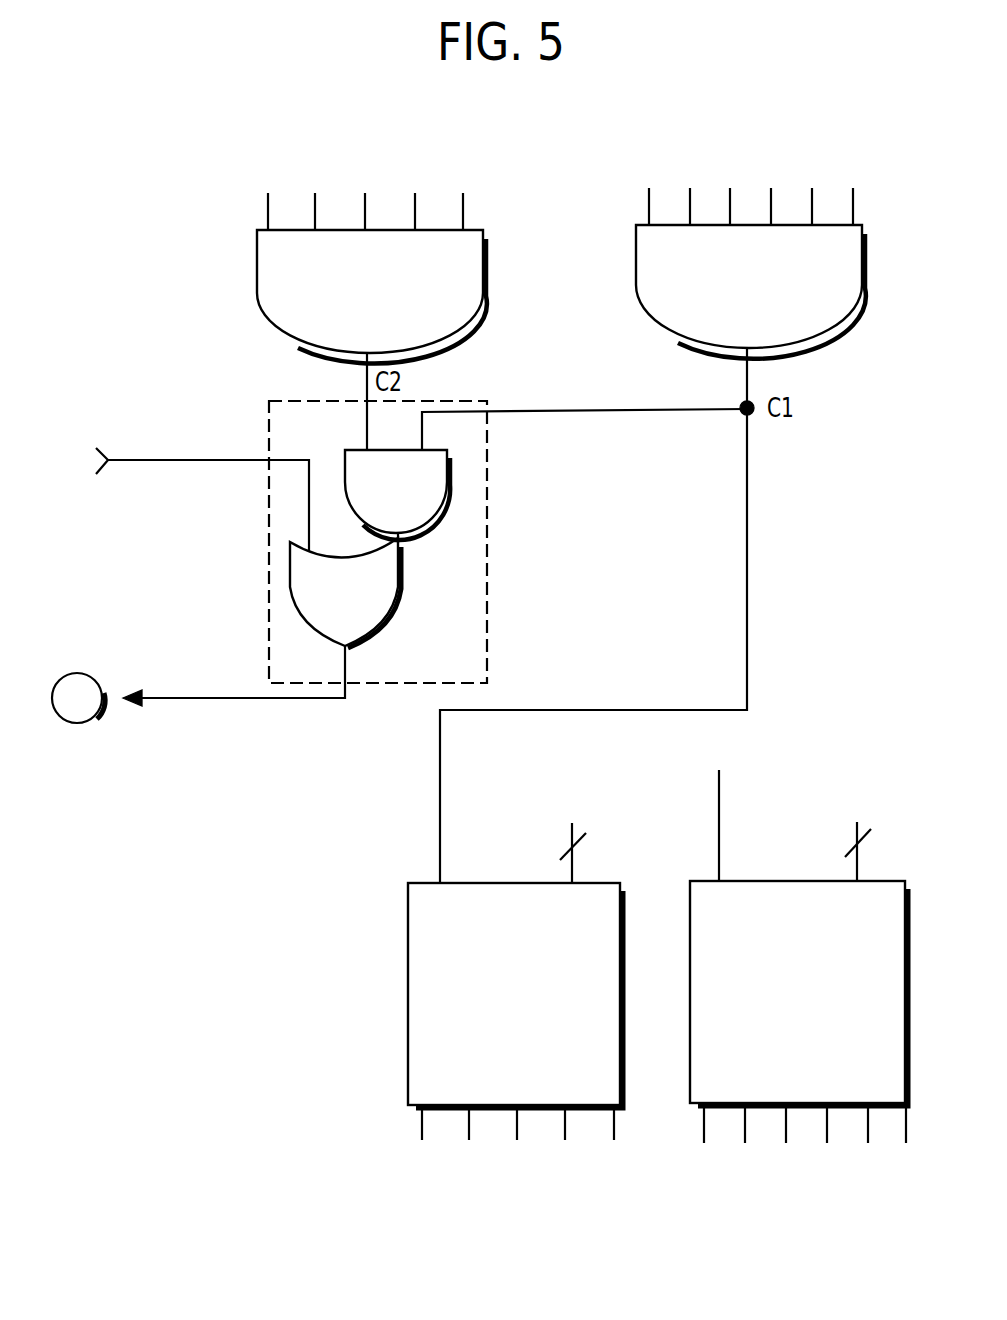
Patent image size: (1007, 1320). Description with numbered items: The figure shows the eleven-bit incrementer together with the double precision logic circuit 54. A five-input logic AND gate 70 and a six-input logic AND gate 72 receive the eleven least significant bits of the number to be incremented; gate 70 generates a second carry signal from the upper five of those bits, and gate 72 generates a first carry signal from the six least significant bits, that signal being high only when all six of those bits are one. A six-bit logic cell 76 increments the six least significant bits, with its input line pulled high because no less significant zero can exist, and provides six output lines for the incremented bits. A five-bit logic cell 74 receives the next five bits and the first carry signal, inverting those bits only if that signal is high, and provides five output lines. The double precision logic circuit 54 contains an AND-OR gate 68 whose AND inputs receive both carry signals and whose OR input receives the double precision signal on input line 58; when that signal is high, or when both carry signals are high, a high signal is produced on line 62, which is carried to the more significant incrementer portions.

The double precision logic circuit 54 is at (313, 451).
The input line 58 is at (158, 460).
The line 62 is at (172, 698).
The AND-OR gate 68 is at (357, 604).
The 5-input logic AND gate 70 is at (386, 301).
The 6-input logic AND gate 72 is at (765, 295).
The 5-bit logic cell 74 is at (528, 1048).
The 6-bit logic cell 76 is at (808, 1047).